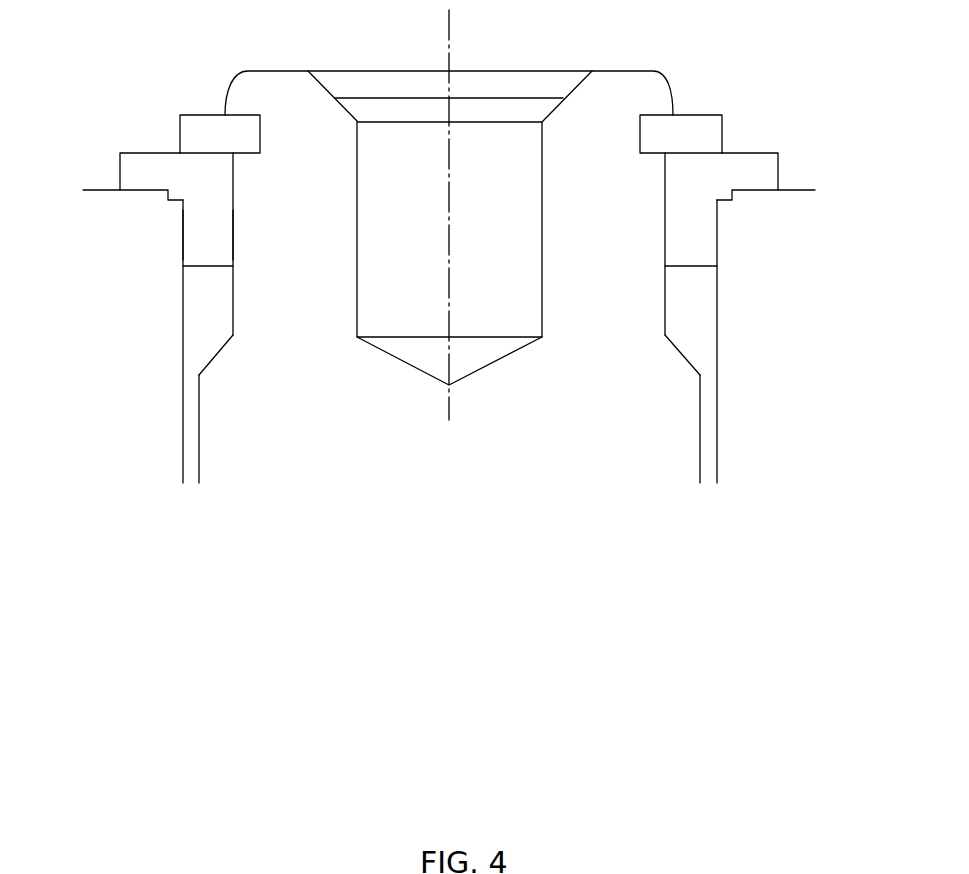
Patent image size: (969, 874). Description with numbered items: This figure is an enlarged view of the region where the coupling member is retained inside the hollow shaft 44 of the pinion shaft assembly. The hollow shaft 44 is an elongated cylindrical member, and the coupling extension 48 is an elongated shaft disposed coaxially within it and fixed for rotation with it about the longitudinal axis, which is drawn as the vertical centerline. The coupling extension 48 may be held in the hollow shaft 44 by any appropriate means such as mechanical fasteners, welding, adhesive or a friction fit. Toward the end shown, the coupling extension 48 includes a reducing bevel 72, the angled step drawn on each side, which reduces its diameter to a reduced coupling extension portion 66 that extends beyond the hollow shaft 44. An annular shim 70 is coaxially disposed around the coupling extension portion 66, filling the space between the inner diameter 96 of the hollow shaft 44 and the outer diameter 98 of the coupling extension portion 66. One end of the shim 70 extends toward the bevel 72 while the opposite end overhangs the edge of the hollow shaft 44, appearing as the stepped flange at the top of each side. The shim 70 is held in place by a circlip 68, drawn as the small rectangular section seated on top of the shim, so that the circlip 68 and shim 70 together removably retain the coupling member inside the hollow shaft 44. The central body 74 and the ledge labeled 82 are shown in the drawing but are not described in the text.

The hollow shaft 44 is at (182, 435).
The coupling extension 48 is at (200, 435).
The reduced coupling extension portion 66 is at (598, 115).
The circlip 68 is at (195, 132).
The annular shim 70 is at (132, 170).
The reducing bevel 72 is at (220, 357).
The central pin 74 is at (505, 260).
The annular ledge 82 is at (197, 292).
The inner diameter 96 is at (180, 230).
The outer diameter 98 is at (235, 237).